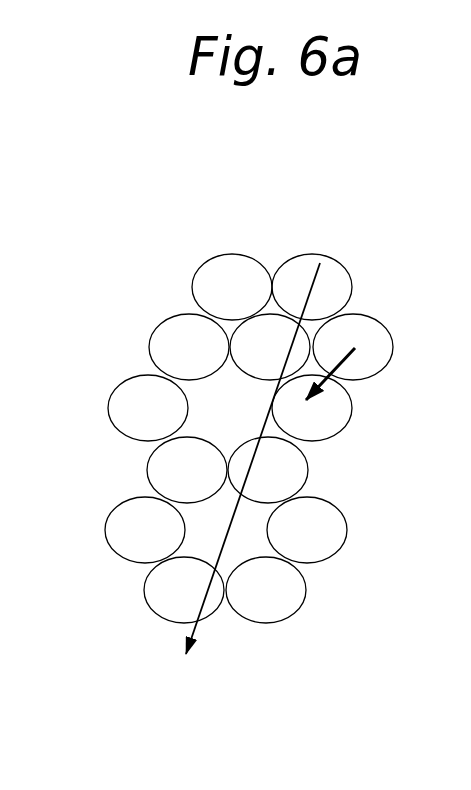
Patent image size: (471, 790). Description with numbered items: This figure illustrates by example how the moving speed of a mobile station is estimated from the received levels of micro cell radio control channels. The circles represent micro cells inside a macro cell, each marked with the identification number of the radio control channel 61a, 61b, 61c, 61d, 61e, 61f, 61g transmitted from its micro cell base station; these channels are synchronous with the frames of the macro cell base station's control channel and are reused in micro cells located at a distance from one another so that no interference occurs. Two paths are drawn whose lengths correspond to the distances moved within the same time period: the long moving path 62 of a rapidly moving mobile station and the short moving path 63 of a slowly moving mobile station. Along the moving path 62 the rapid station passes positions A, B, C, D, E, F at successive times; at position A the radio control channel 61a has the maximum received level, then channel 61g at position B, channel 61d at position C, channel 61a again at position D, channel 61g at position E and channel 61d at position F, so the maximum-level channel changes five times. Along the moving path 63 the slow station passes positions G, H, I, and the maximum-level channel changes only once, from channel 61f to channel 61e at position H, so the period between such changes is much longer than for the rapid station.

The radio control channel 61a is at (328, 253).
The radio control channel 61b is at (233, 254).
The radio control channel 61c is at (168, 313).
The radio control channel 61d is at (127, 380).
The radio control channel 61e is at (353, 418).
The radio control channel 61f is at (381, 313).
The radio control channel 61g is at (313, 326).
The moving path 62 is at (312, 326).
The moving path 63 is at (340, 350).
The position A is at (303, 302).
The position B is at (289, 350).
The position C is at (264, 416).
The position D is at (254, 469).
The position E is at (227, 530).
The position F is at (204, 592).
The position G is at (343, 326).
The position H is at (332, 366).
The position I is at (307, 407).